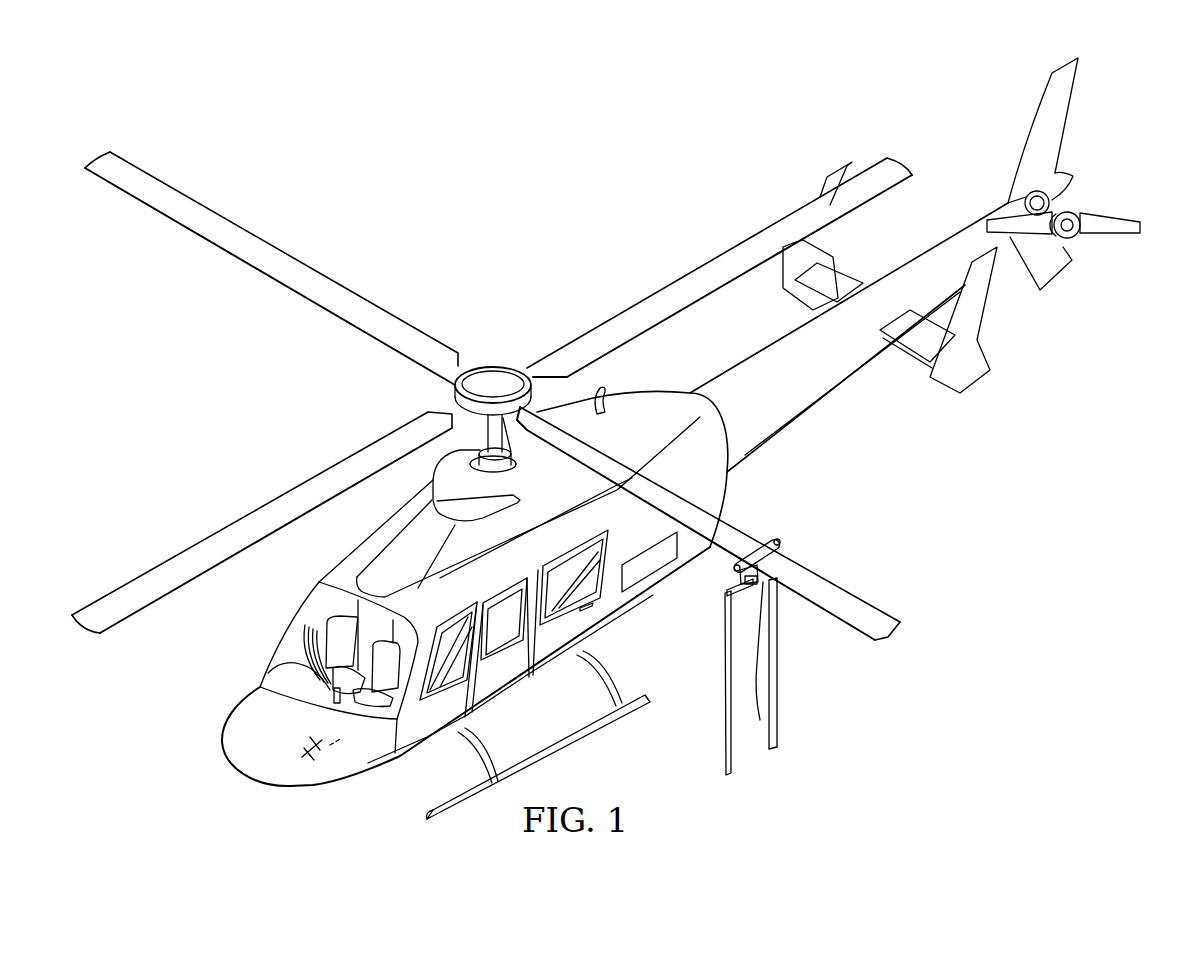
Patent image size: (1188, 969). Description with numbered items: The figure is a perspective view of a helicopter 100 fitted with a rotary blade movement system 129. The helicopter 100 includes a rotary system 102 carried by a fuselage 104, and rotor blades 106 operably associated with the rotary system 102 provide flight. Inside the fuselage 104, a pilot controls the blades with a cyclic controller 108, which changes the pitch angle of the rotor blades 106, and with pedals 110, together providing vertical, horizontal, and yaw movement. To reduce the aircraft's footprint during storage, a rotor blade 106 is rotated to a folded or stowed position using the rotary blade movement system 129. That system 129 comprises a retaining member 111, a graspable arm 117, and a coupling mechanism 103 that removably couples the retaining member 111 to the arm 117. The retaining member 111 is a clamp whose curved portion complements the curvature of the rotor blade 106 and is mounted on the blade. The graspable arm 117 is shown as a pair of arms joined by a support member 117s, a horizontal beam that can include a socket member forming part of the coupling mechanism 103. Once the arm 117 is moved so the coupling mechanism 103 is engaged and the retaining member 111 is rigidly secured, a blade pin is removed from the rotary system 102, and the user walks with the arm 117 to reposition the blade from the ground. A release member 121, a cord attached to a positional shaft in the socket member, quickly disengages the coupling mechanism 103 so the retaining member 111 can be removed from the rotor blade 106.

The helicopter 100 is at (250, 123).
The rotary system 102 is at (500, 351).
The coupling mechanism 103 is at (750, 582).
The fuselage 104 is at (343, 571).
The rotor blade 106 is at (830, 578).
The cyclic controller 108 is at (333, 737).
The pedals 110 is at (328, 733).
The retaining member 111 is at (755, 543).
The graspable arm 117 is at (778, 662).
The support member 117s is at (745, 595).
The release member 121 is at (760, 701).
The rotary blade movement system 129 is at (724, 579).